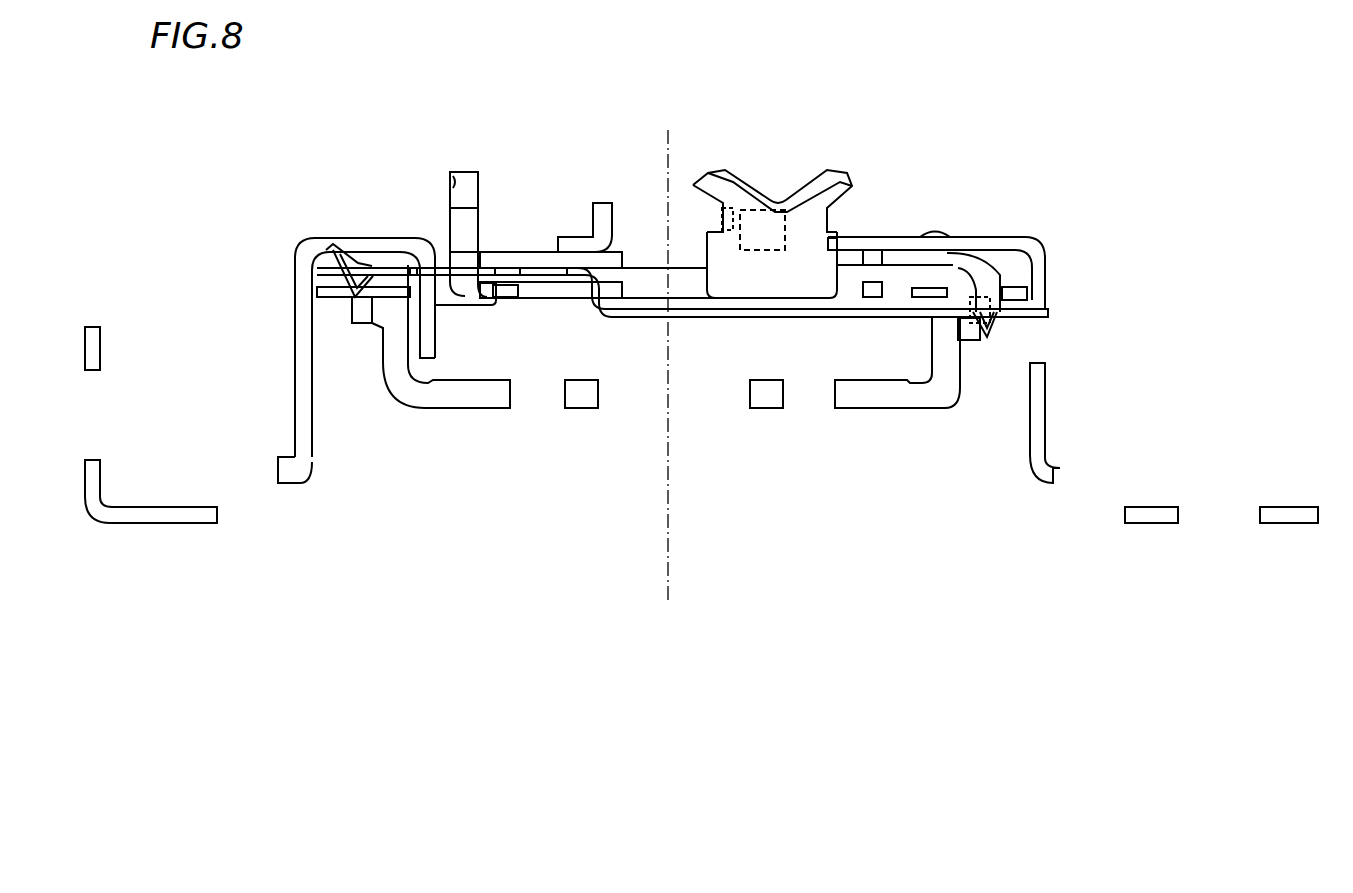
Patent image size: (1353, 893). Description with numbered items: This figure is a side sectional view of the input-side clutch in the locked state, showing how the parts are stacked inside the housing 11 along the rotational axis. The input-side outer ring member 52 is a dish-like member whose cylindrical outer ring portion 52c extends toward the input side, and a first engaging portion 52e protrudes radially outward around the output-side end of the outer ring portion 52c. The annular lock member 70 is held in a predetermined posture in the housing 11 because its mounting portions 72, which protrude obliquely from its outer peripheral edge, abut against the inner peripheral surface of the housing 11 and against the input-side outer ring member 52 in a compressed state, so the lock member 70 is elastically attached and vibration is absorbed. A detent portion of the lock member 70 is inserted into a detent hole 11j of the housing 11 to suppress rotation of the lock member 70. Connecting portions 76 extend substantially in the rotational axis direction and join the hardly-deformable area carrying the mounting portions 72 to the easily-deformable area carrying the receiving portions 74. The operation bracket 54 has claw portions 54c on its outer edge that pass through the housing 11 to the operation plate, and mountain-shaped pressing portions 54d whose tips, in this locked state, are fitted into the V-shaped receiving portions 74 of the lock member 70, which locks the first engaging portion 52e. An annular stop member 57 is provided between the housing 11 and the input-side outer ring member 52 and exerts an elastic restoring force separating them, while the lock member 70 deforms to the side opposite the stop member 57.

The housing 11 is at (1026, 239).
The detent hole 11j is at (1028, 362).
The input-side outer ring member 52 is at (396, 400).
The outer ring portion 52c is at (383, 362).
The first engaging portion 52e is at (1038, 306).
The operation bracket 54 is at (815, 172).
The claw portion 54c is at (466, 172).
The pressing portion 54d is at (1000, 331).
The stop member 57 is at (1022, 282).
The lock member 70 is at (713, 317).
The mounting portion 72 is at (352, 255).
The receiving portion 74 is at (980, 345).
The connecting portion 76 is at (582, 292).